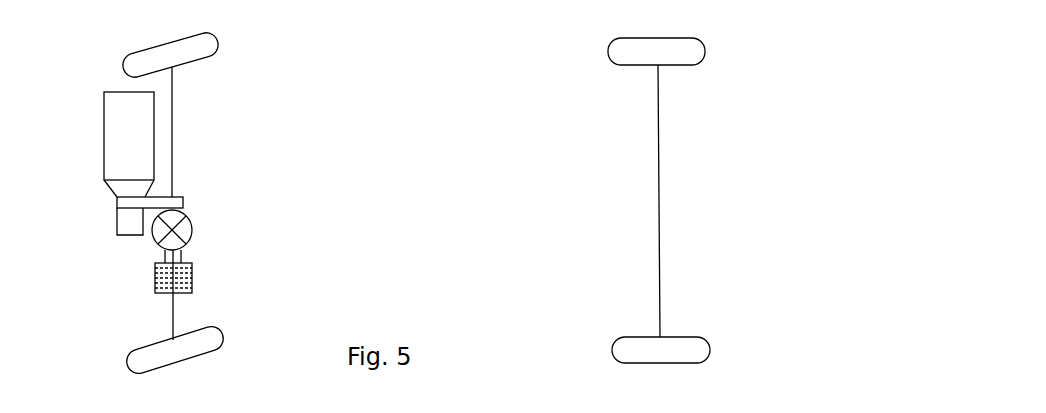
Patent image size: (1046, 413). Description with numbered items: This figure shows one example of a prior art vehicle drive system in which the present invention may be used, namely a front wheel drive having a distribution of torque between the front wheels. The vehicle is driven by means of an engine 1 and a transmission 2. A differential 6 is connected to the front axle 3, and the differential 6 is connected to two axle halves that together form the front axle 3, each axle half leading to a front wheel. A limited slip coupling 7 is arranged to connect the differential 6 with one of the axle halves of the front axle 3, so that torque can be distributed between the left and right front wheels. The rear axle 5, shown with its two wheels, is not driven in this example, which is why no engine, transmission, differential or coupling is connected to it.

The engine 1 is at (115, 136).
The transmission 2 is at (130, 225).
The front axle 3 is at (173, 143).
The rear axle 5 is at (658, 190).
The differential 6 is at (192, 230).
The limited slip coupling 7 is at (192, 282).